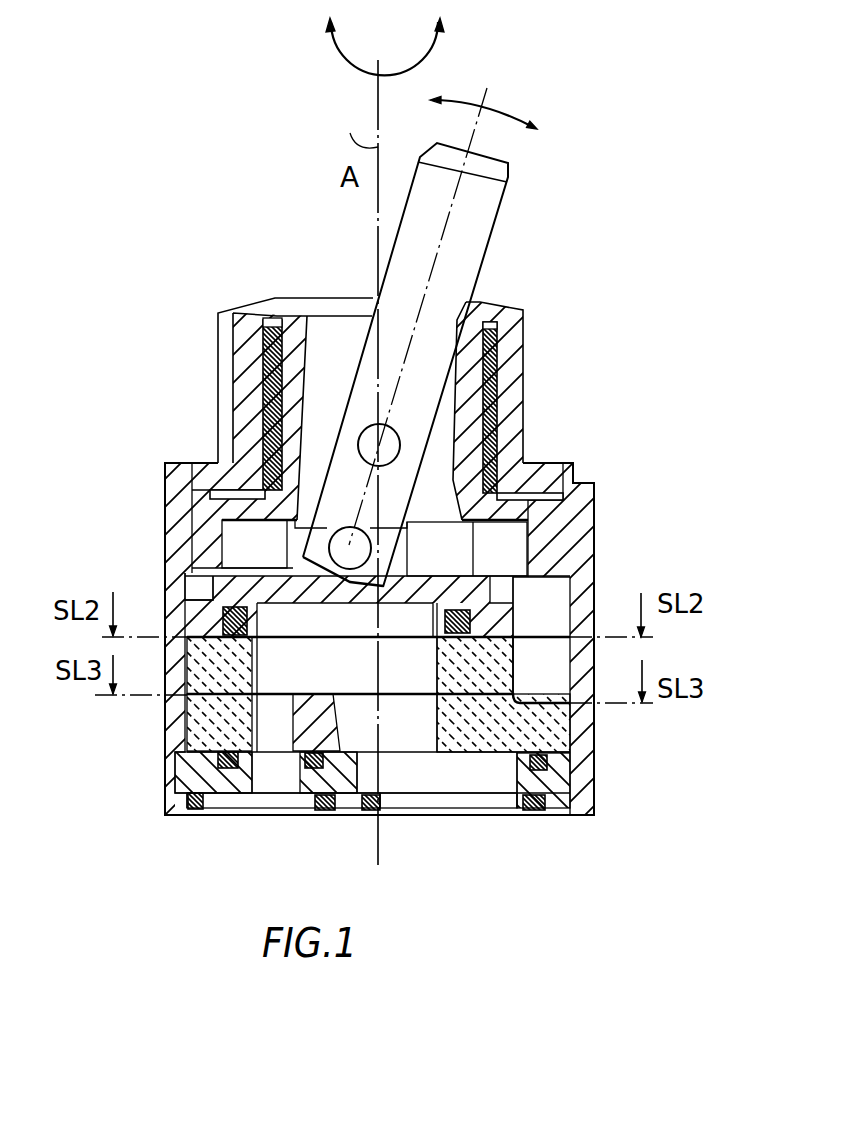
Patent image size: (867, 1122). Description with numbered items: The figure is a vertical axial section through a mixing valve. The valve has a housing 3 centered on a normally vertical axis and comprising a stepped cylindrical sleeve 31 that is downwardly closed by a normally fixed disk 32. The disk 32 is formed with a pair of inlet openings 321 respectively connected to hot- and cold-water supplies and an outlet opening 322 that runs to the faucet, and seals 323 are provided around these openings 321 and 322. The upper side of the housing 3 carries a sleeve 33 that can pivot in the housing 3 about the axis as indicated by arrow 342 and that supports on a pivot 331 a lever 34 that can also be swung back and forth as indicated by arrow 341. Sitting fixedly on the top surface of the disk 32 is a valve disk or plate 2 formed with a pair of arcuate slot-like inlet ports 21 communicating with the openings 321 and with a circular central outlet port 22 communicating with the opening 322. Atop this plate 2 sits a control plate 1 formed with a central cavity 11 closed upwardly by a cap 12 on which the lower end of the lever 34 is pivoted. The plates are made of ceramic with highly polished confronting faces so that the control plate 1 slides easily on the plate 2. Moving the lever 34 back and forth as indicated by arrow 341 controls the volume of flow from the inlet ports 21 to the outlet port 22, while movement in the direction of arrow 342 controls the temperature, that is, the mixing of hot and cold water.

The control plate 1 is at (513, 660).
The valve disk or plate 2 is at (557, 687).
The housing 3 is at (603, 530).
The central cavity 11 is at (262, 697).
The cap 12 is at (168, 597).
The arcuate slot-like inlet ports 21 is at (262, 694).
The circular central outlet port 22 is at (390, 778).
The stepped cylindrical sleeve 31 is at (583, 776).
The disk 32 is at (549, 815).
The inlet openings 321 is at (273, 793).
The outlet opening 322 is at (477, 787).
The seals 323 is at (200, 817).
The sleeve 33 is at (312, 298).
The pivot 331 is at (365, 440).
The lever 34 is at (483, 212).
The arrow 341 is at (516, 74).
The arrow 342 is at (356, 93).